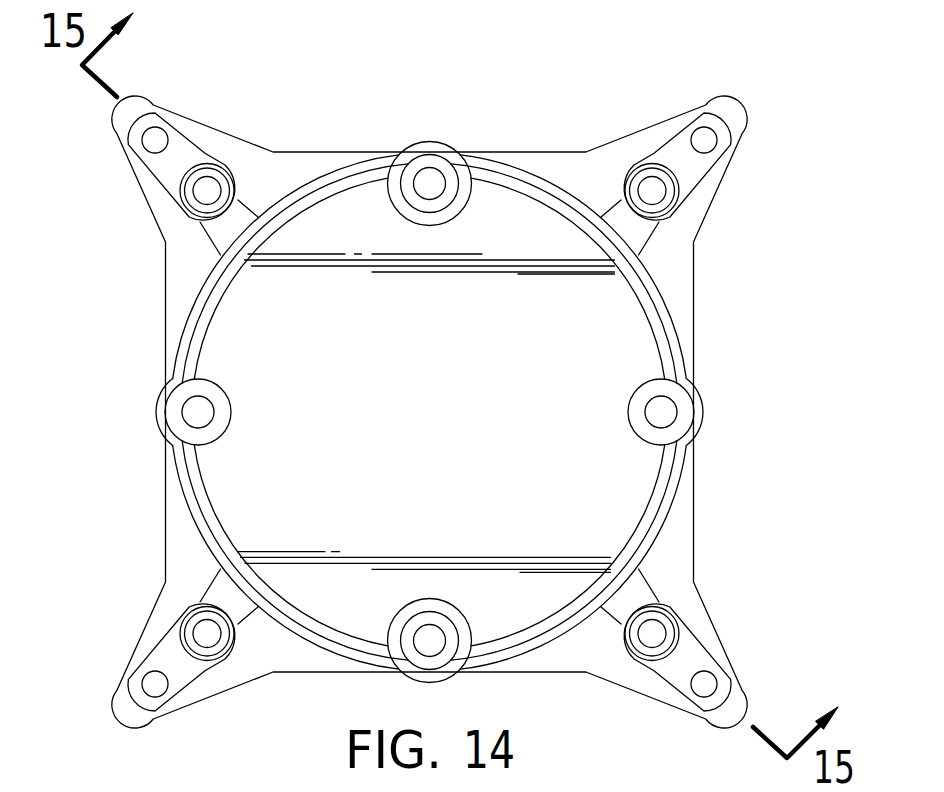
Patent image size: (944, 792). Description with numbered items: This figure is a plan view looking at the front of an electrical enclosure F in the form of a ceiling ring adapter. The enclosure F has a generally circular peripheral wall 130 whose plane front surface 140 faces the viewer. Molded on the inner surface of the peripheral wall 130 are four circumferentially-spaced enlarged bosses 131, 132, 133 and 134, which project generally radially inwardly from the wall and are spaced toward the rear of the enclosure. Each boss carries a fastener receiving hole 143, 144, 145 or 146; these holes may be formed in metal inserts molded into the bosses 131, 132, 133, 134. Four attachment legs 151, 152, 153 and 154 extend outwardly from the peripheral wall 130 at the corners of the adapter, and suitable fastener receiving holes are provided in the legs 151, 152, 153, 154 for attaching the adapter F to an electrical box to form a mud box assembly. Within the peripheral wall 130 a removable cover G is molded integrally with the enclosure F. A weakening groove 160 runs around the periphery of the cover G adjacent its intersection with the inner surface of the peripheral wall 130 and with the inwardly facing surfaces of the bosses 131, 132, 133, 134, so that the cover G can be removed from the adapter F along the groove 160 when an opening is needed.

The peripheral wall 130 is at (653, 280).
The front surface 140 is at (668, 333).
The weakening groove 160 is at (663, 493).
The enlarged boss 131 is at (212, 390).
The enlarged boss 132 is at (458, 194).
The enlarged boss 133 is at (646, 392).
The enlarged boss 134 is at (458, 628).
The fastener receiving hole 143 is at (200, 412).
The fastener receiving hole 144 is at (424, 188).
The fastener receiving hole 145 is at (661, 413).
The fastener receiving hole 146 is at (424, 636).
The attachment leg 151 is at (128, 124).
The attachment leg 152 is at (733, 124).
The attachment leg 153 is at (737, 700).
The attachment leg 154 is at (128, 699).
The electrical enclosure F is at (574, 96).
The removable cover G is at (442, 428).